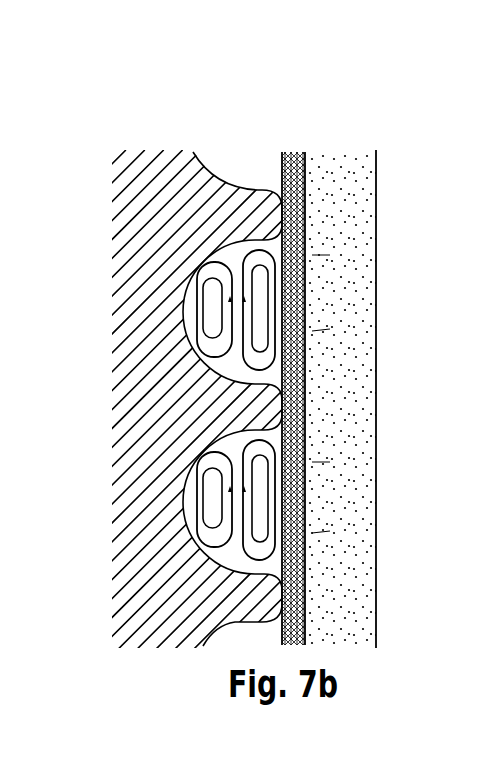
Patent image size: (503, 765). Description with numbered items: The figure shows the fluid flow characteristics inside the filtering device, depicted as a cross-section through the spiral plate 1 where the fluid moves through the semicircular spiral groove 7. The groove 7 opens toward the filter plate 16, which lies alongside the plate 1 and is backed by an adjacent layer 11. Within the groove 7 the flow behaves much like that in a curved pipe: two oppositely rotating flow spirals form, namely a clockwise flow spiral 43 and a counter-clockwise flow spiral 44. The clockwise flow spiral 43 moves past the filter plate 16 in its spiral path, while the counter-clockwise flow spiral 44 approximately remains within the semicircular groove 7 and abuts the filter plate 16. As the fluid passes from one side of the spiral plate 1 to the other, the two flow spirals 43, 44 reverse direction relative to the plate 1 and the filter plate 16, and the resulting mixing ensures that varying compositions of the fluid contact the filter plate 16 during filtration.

The spiral plate 1 is at (157, 203).
The spiral groove 7 is at (228, 240).
The filter plate 16 is at (300, 180).
The outer layer 11 is at (343, 163).
The clockwise flow spiral 43 is at (310, 255).
The counter-clockwise flow spiral 44 is at (310, 331).